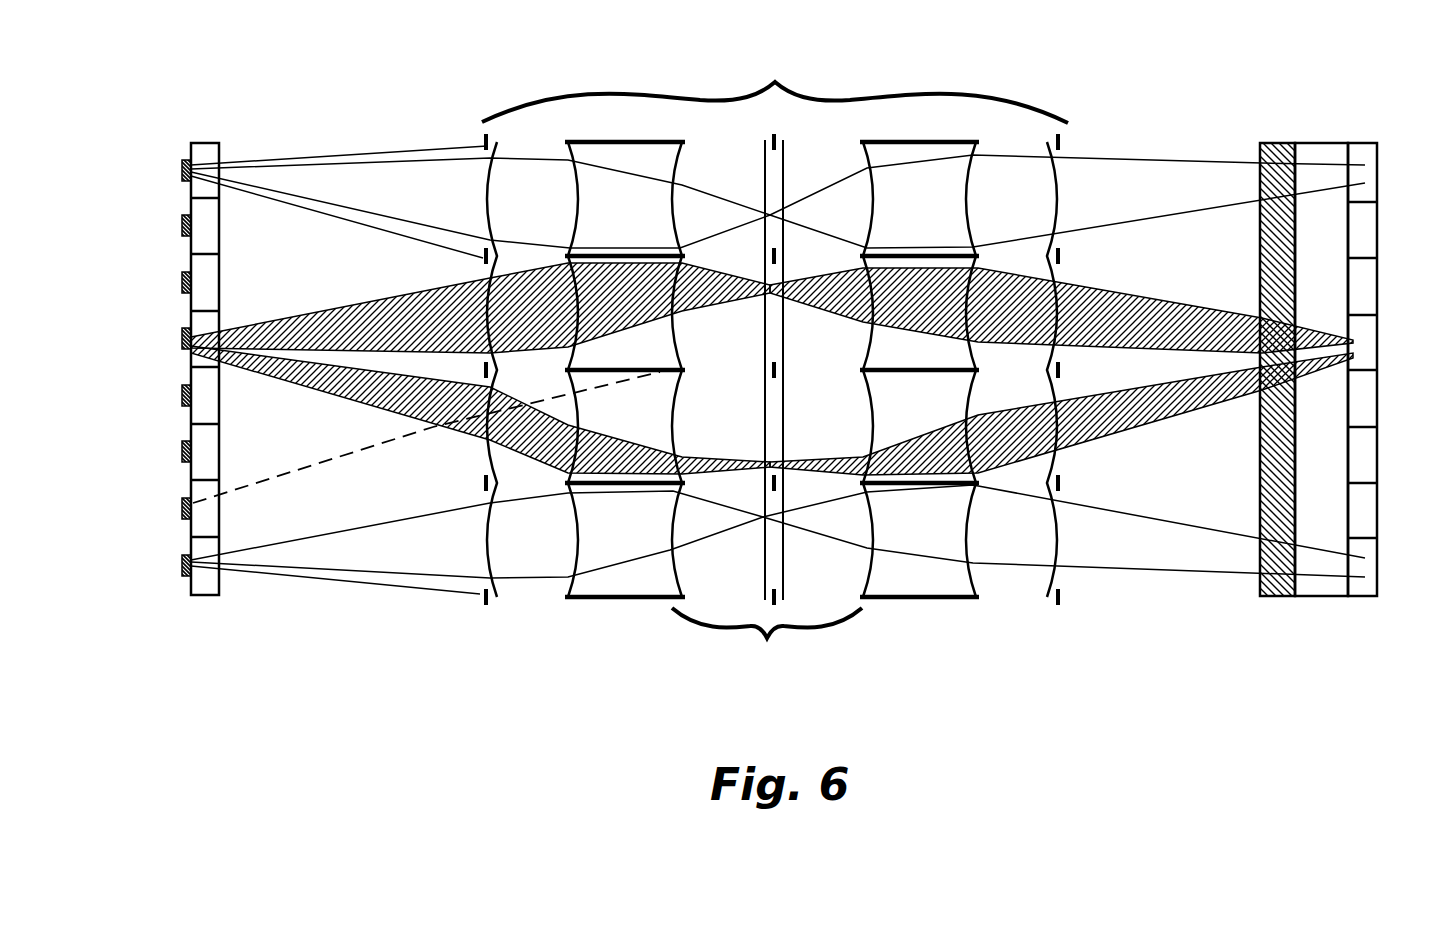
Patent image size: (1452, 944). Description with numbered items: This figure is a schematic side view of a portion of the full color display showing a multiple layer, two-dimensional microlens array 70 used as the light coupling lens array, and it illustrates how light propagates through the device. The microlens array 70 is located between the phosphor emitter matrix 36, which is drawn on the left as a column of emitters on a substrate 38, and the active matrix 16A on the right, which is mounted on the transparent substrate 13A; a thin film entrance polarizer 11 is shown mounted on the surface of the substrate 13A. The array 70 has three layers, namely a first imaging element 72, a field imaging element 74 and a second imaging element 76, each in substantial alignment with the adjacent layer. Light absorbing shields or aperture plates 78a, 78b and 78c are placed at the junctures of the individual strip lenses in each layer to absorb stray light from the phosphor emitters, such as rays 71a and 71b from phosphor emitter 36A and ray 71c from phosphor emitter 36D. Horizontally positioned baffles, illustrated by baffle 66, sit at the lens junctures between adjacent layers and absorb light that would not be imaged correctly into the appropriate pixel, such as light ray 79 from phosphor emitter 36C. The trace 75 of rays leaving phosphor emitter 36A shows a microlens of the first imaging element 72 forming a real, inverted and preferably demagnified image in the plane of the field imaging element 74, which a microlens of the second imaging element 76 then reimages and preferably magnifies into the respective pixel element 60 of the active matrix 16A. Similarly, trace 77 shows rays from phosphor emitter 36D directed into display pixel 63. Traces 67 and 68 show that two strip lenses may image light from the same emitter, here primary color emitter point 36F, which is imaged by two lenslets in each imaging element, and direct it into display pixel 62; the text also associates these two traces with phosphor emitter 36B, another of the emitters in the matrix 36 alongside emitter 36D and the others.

The thin film entrance polarizer 11 is at (1283, 142).
The transparent substrate 13A is at (1322, 142).
The active matrix 16A is at (1396, 344).
The phosphor emitter matrix 36 is at (150, 379).
The phosphor emitter 36A is at (181, 171).
The phosphor emitter 36B is at (181, 228).
The phosphor emitter 36C is at (181, 510).
The phosphor emitter 36D is at (181, 566).
The primary color emitter point 36F is at (181, 340).
The emitter array substrate 38 is at (207, 142).
The pixel element 60 is at (1382, 178).
The display pixel 62 is at (1378, 343).
The display pixel 63 is at (1375, 567).
The baffle 66 is at (660, 366).
The light ray trace 67 is at (313, 312).
The light ray trace 68 is at (327, 395).
The microlens array 70 is at (763, 359).
The stray light ray 71a is at (348, 148).
The stray light ray 71b is at (395, 235).
The stray light ray 71c is at (303, 580).
The first imaging element 72 is at (625, 403).
The field imaging element 74 is at (767, 402).
The light ray trace 75 is at (697, 183).
The second imaging element 76 is at (1007, 597).
The light ray trace 77 is at (705, 540).
The light absorbing shield 78a is at (477, 598).
The light absorbing shield 78b is at (778, 596).
The light absorbing shield 78c is at (1060, 594).
The light ray 79 is at (353, 458).